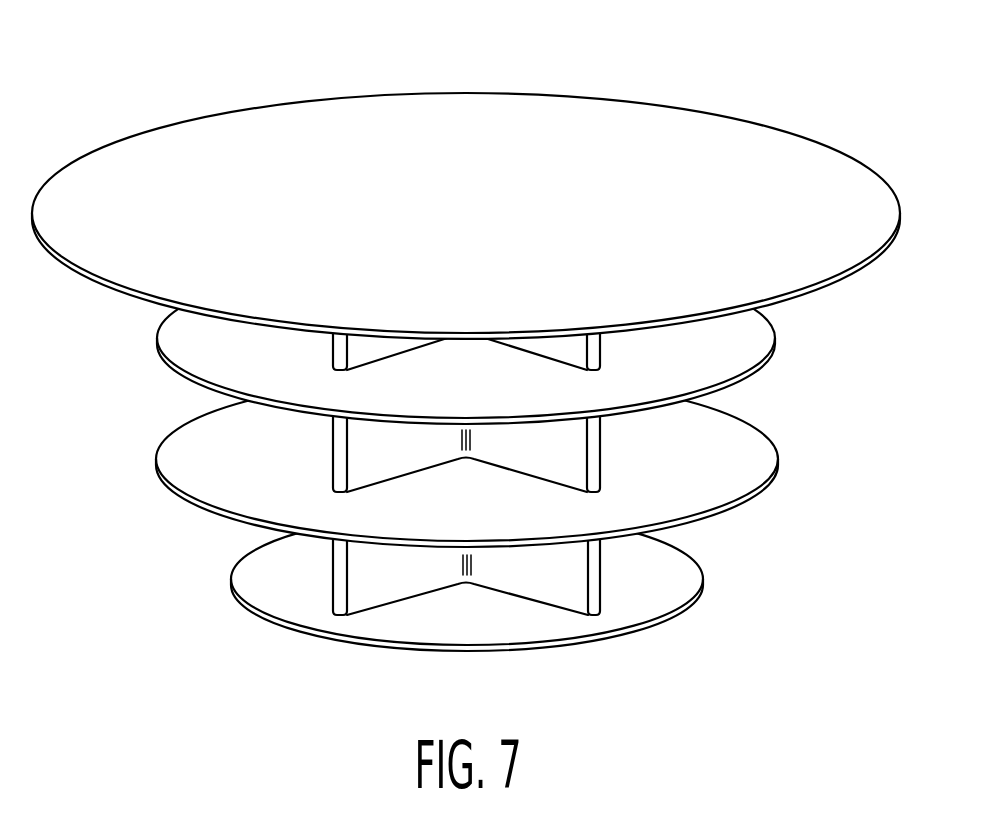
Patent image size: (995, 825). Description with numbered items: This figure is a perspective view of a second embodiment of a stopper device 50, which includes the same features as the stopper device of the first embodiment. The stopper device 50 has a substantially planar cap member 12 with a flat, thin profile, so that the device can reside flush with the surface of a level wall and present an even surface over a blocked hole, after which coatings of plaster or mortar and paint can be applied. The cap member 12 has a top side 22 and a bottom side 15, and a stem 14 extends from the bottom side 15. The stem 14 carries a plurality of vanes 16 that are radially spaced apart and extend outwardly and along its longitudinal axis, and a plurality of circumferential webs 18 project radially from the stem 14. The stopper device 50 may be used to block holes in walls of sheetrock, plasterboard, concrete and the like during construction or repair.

The stopper device 50 is at (466, 356).
The cap member 12 is at (466, 182).
The top side 22 is at (624, 124).
The bottom side 15 is at (797, 302).
The circumferential webs 18 is at (430, 485).
The stem 14 is at (600, 443).
The vanes 16 is at (385, 585).